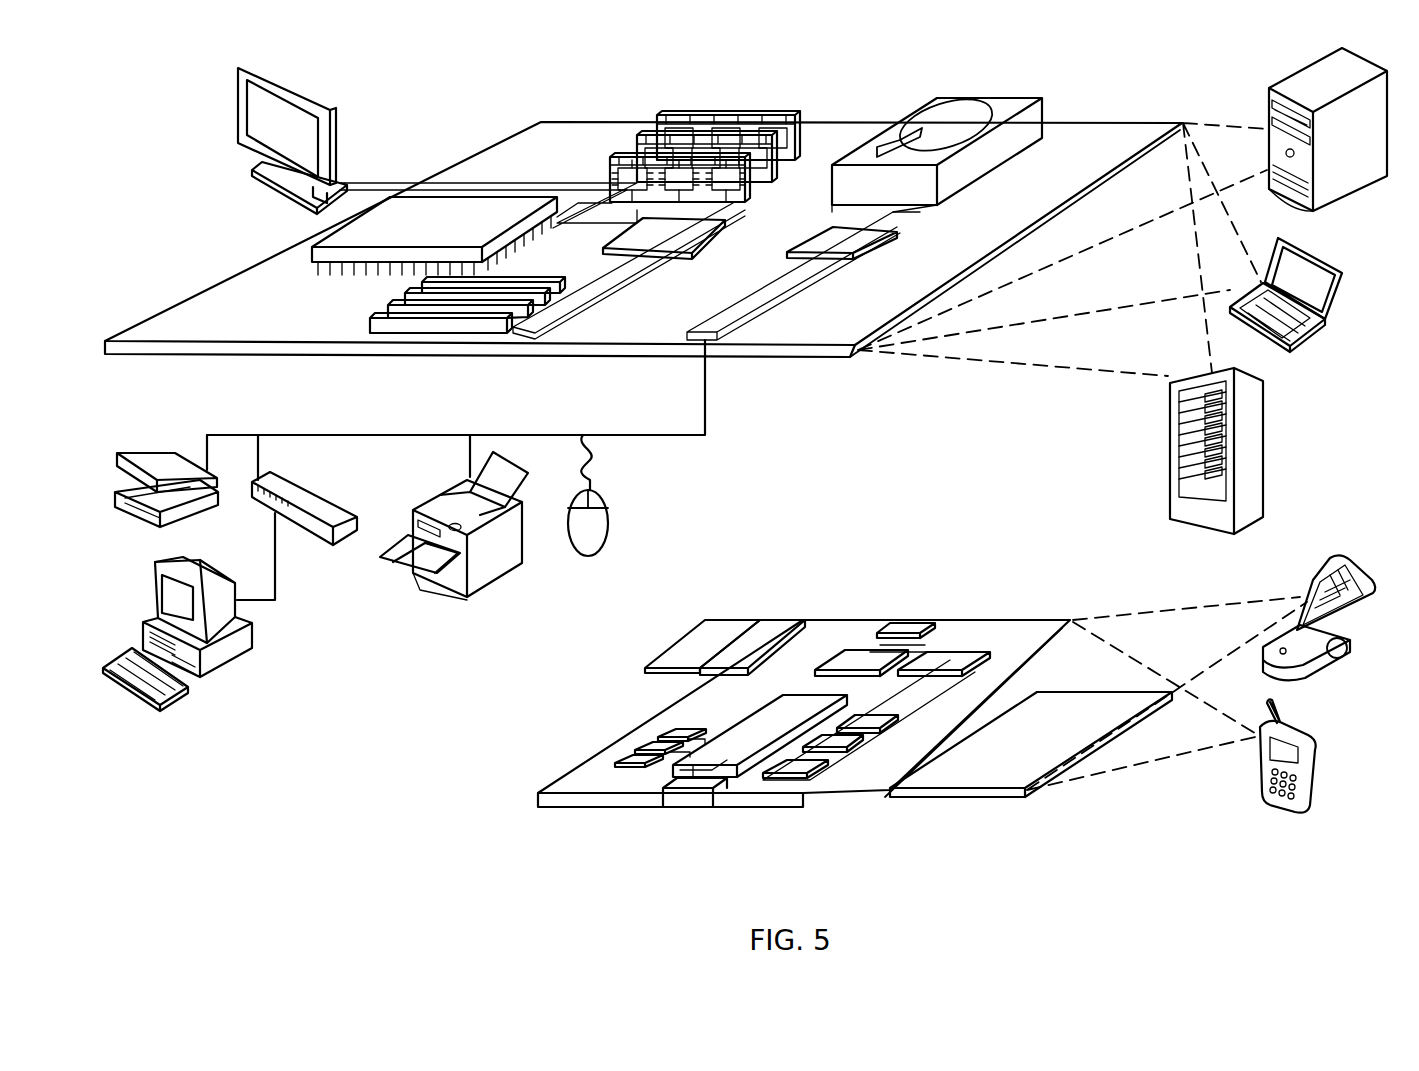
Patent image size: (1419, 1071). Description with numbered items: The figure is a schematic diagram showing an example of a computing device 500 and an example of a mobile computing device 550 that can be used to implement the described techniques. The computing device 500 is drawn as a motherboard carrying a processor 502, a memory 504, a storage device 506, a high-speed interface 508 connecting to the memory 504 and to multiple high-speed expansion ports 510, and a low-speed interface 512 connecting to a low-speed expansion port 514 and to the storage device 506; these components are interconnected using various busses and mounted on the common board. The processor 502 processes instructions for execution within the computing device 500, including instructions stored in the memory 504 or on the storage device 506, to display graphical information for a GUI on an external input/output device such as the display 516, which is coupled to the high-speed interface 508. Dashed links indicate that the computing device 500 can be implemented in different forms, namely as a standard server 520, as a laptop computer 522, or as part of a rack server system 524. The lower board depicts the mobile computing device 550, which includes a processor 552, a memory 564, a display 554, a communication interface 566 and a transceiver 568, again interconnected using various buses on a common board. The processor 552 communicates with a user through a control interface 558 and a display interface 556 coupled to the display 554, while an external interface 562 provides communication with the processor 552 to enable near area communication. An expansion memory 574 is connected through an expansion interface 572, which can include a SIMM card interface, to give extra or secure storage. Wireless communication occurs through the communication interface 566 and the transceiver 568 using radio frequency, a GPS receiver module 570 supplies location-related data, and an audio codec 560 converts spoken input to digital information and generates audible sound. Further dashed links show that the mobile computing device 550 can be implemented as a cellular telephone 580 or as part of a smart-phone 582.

The computing device 500 is at (452, 93).
The processor 502 is at (312, 250).
The memory 504 is at (673, 115).
The storage device 506 is at (933, 100).
The high-speed interface 508 is at (640, 237).
The high-speed expansion ports 510 is at (397, 313).
The low-speed interface 512 is at (813, 232).
The low-speed expansion port 514 is at (712, 352).
The display 516 is at (246, 66).
The standard server 520 is at (1270, 96).
The laptop computer 522 is at (1345, 265).
The rack server system 524 is at (1170, 476).
The mobile computing device 550 is at (512, 802).
The processor 552 is at (730, 757).
The display 554 is at (985, 778).
The display interface 556 is at (802, 770).
The control interface 558 is at (850, 747).
The audio codec 560 is at (873, 720).
The external interface 562 is at (693, 793).
The memory 564 is at (637, 750).
The communication interface 566 is at (860, 660).
The transceiver 568 is at (945, 660).
The GPS receiver module 570 is at (917, 623).
The expansion interface 572 is at (783, 632).
The expansion memory 574 is at (703, 637).
The cellular telephone 580 is at (1337, 597).
The smart-phone 582 is at (1263, 757).